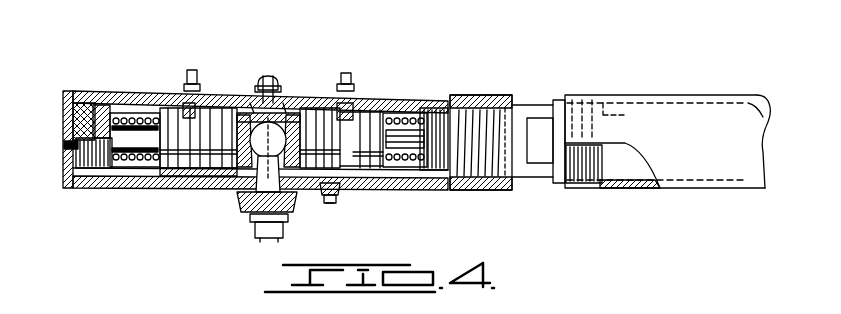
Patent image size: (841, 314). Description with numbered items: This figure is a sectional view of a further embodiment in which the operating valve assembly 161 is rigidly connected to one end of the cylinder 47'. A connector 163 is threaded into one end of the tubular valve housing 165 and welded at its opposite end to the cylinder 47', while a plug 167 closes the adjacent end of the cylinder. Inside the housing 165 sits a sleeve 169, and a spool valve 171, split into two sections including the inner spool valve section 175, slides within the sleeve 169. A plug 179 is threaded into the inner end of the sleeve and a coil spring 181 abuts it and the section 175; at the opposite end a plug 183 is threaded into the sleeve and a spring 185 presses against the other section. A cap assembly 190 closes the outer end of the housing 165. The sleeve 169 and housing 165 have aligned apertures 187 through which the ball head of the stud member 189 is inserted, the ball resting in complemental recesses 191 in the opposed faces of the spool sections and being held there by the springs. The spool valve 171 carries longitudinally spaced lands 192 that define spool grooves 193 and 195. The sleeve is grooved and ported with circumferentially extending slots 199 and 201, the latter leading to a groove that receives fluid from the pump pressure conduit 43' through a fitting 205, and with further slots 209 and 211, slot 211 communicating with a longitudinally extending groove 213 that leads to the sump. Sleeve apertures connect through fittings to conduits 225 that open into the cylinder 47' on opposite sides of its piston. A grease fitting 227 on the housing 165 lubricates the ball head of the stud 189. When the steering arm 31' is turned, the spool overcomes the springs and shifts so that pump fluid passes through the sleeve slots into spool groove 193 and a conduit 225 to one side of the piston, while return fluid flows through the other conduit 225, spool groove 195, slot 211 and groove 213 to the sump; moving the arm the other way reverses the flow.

The spool valve groove 193 is at (172, 93).
The cap assembly 190 is at (80, 188).
The plug 183 is at (98, 190).
The spring 185 is at (122, 188).
The circumferentially extending slot 209 is at (170, 188).
The circumferentially extending slot 199 is at (226, 189).
The aligned apertures 187 is at (230, 189).
The spool valve 171 is at (311, 92).
The complemental recesses 191 is at (238, 115).
The spool valve section 175 is at (213, 91).
The steering arm 31' is at (245, 236).
The stud member 189 is at (297, 195).
The sleeve 169 is at (333, 92).
The spool valve groove 195 is at (386, 90).
The lands 192 is at (380, 92).
The circumferentially extending slot 211 is at (353, 173).
The longitudinally extending groove 213 is at (388, 178).
The coil spring 181 is at (403, 173).
The plug 179 is at (442, 173).
The circumferentially extending slot 201 is at (337, 188).
The fitting 205 is at (321, 193).
The pump pressure conduit 43' is at (348, 224).
The conduit 225 is at (403, 29).
The grease fitting 227 is at (270, 76).
The operating valve assembly 161 is at (438, 92).
The connector 163 is at (528, 95).
The tubular valve housing 165 is at (473, 92).
The plug 167 is at (578, 175).
The cylinder 47' is at (633, 183).